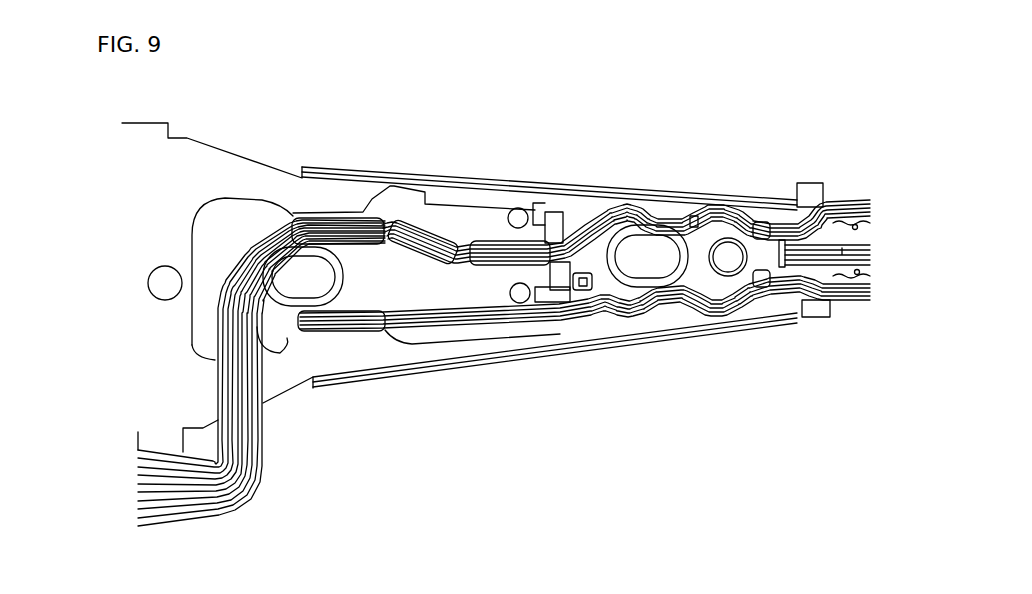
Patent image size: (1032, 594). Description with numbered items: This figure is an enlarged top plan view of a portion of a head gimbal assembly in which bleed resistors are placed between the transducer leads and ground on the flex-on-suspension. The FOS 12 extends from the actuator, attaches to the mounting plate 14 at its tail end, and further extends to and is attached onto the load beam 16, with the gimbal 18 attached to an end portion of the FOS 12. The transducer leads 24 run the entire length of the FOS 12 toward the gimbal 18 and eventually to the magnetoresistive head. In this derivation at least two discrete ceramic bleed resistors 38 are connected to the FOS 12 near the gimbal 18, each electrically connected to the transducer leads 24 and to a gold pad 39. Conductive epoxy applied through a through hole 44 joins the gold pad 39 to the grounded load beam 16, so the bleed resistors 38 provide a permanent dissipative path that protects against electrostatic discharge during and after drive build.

The FOS 12 is at (290, 212).
The mounting plate 14 is at (142, 122).
The load beam 16 is at (341, 384).
The gimbal 18 is at (853, 300).
The transducer leads 24 is at (641, 222).
The bleed resistor 38 is at (562, 232).
The gold pad 39 is at (537, 212).
The through hole 44 is at (507, 220).